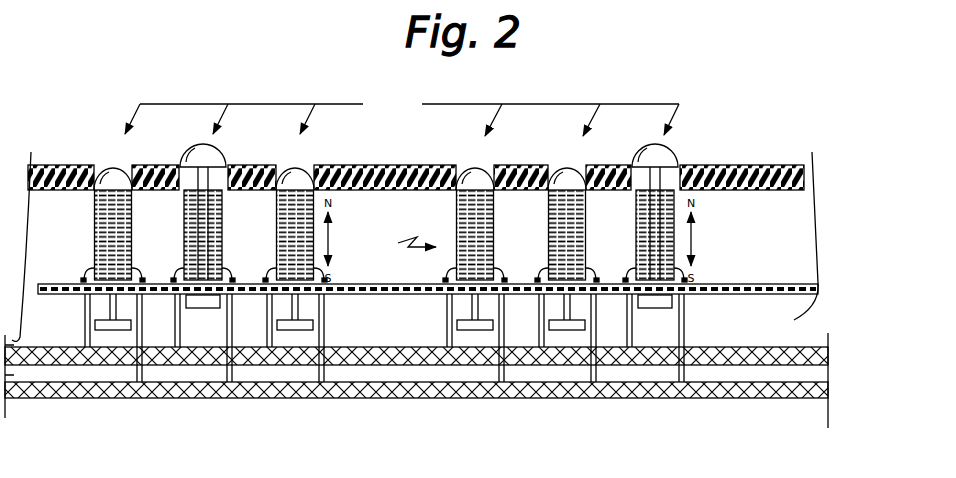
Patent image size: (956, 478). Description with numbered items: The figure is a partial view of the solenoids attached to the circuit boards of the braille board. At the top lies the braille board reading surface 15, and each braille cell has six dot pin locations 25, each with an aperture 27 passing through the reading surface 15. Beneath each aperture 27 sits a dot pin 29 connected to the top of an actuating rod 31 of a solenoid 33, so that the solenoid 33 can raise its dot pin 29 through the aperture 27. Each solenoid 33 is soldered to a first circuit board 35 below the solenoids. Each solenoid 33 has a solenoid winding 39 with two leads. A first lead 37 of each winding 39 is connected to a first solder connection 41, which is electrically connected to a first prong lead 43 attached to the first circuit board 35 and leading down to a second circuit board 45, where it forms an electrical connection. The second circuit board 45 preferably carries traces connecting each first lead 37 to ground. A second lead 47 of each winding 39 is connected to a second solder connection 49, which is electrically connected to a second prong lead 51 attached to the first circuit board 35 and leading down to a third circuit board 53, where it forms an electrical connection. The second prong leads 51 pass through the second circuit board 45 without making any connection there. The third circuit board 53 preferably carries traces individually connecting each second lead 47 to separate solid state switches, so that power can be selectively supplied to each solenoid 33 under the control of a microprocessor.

The braille board reading surface 15 is at (800, 179).
The dot pin locations 25 is at (402, 113).
The aperture 27 is at (497, 190).
The dot pin 29 is at (460, 189).
The actuating rod 31 is at (594, 272).
The solenoid 33 is at (404, 242).
The first circuit board 35 is at (815, 290).
The first lead 37 is at (95, 252).
The solenoid winding 39 is at (133, 197).
The first solder connection 41 is at (80, 297).
The first prong lead 43 is at (83, 335).
The second circuit board 45 is at (830, 357).
The second lead 47 is at (131, 275).
The second solder connection 49 is at (140, 294).
The second prong lead 51 is at (134, 370).
The third circuit board 53 is at (830, 392).